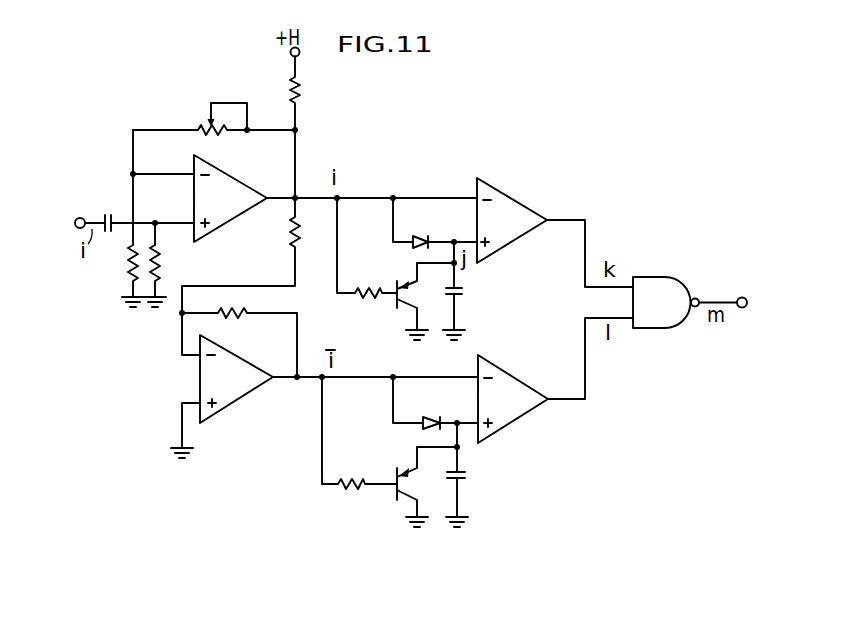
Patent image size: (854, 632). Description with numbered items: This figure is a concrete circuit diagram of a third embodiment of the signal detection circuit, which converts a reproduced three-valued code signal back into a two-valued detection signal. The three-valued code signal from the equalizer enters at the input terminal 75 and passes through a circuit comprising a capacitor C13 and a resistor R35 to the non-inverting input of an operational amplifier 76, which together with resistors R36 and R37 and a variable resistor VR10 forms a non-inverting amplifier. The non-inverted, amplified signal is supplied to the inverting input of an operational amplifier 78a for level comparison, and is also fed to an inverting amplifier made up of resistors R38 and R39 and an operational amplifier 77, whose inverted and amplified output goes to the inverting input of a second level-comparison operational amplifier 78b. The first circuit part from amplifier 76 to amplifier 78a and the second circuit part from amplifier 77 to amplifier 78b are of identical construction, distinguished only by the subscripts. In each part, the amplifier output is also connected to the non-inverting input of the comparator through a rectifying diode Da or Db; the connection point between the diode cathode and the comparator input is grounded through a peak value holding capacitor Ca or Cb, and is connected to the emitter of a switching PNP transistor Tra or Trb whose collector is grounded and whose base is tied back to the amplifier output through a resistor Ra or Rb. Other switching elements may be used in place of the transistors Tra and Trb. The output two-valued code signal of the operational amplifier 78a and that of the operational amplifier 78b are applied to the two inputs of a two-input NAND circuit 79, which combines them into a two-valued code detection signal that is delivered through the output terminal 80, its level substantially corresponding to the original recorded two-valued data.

The input terminal 75 is at (77, 219).
The capacitor C13 is at (139, 210).
The resistor R37 is at (118, 265).
The resistor R35 is at (170, 265).
The variable resistor VR10 is at (214, 106).
The operational amplifier 76 is at (228, 174).
The resistor R36 is at (313, 94).
The resistor R38 is at (241, 276).
The resistor R39 is at (239, 333).
The operational amplifier 77 is at (237, 356).
The resistor Ra is at (367, 248).
The PNP transistor Tra is at (396, 303).
The rectifying diode Da is at (435, 223).
The peak value holding capacitor Ca is at (465, 291).
The operational amplifier 78a is at (517, 201).
The resistor Rb is at (359, 433).
The PNP transistor Trb is at (393, 494).
The rectifying diode Db is at (435, 403).
The peak value holding capacitor Cb is at (469, 475).
The operational amplifier 78b is at (513, 376).
The 2-input NAND circuit 79 is at (665, 276).
The output terminal 80 is at (741, 297).